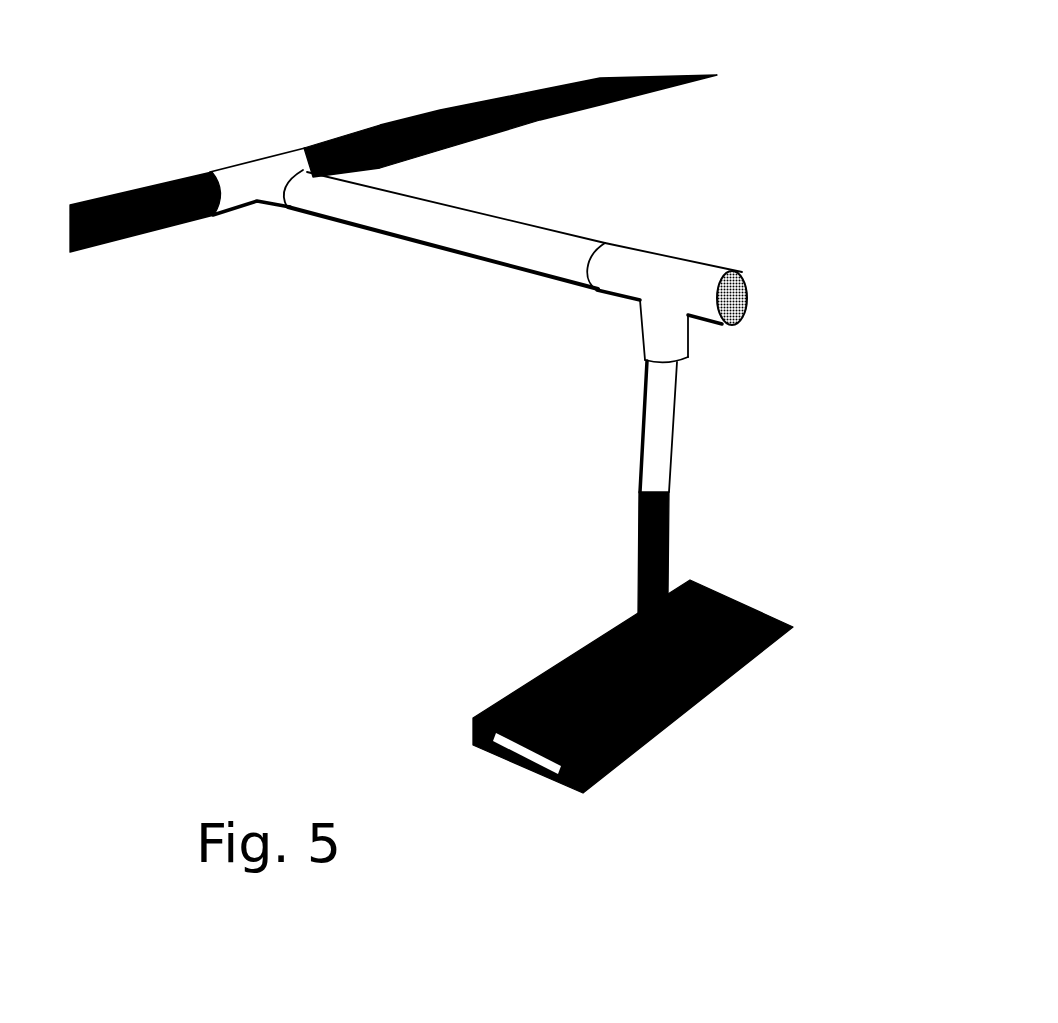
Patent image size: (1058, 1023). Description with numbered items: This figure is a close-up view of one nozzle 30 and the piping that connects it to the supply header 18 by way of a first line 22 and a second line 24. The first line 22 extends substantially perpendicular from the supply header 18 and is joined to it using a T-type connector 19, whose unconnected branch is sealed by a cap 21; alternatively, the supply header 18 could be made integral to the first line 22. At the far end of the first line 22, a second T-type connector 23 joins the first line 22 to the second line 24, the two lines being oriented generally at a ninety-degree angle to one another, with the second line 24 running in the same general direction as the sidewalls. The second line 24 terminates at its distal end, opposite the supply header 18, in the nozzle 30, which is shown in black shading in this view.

The supply header 18 is at (150, 243).
The T-type connector 19 is at (262, 215).
The cap 21 is at (733, 300).
The first line 22 is at (503, 212).
The T-type connector 23 is at (676, 302).
The second line 24 is at (682, 428).
The nozzle 30 is at (708, 560).